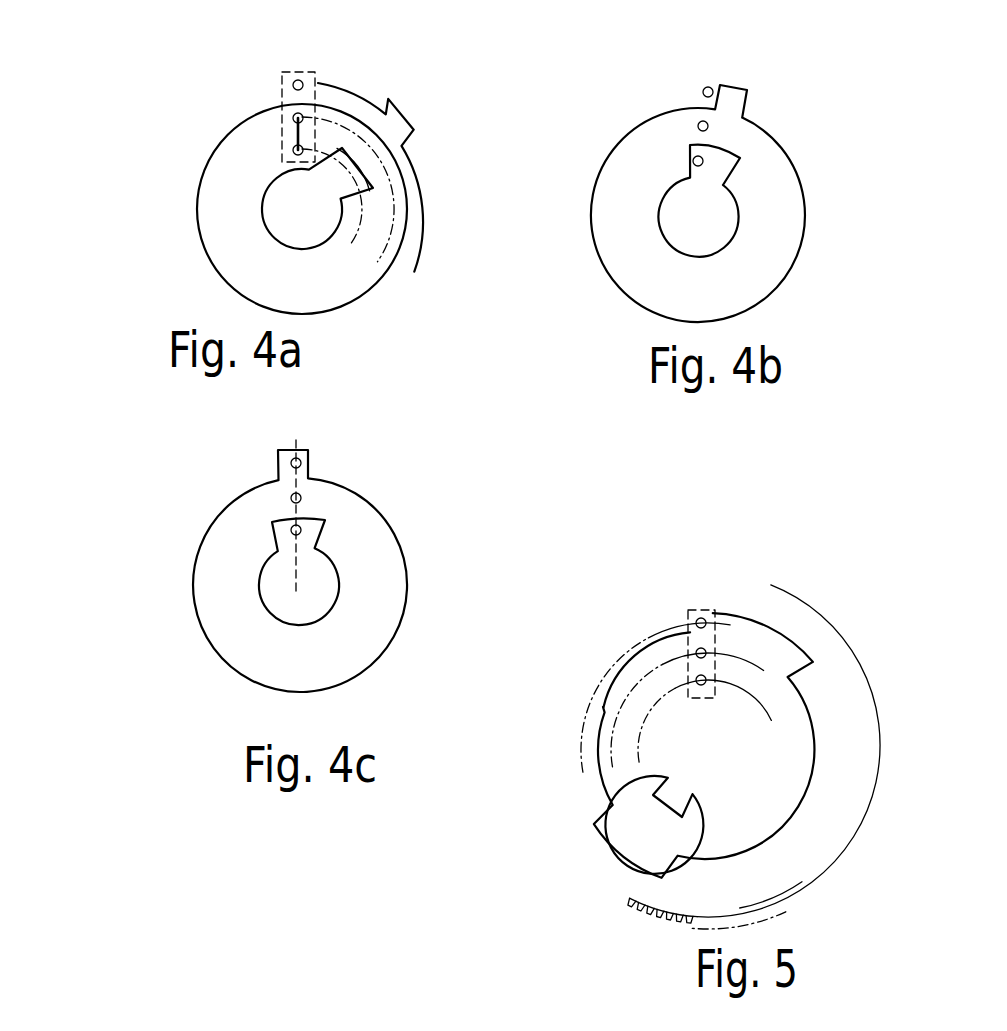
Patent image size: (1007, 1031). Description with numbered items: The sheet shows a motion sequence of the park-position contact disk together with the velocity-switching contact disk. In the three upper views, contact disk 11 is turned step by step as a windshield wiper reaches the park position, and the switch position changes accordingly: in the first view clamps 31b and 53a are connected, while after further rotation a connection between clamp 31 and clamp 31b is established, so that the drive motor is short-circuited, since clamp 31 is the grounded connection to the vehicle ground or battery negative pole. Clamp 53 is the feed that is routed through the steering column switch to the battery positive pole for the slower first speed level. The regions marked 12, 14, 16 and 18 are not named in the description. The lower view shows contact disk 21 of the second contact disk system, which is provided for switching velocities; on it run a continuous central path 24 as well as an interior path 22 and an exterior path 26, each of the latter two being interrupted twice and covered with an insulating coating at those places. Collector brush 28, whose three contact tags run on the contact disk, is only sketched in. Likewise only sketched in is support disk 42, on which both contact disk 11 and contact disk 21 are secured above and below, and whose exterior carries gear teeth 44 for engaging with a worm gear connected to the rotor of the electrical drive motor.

In FIG. 4a, the contact disk 11 is at (222, 257).
In FIG. 4b, the contact disk 11 is at (745, 283).
In FIG. 4c, the contact disk 11 is at (253, 657).
In FIG. 4a, the sensor track 12 is at (353, 245).
In FIG. 4a, the sensor track 14 is at (374, 258).
In FIG. 4a, the outer sensing ring 16 is at (416, 258).
In FIG. 4a, the sensor module 18 is at (320, 88).
In FIG. 5, the contact disk 21 is at (615, 773).
In FIG. 5, the interior path 22 is at (642, 727).
In FIG. 5, the central path 24 is at (627, 697).
In FIG. 5, the exterior path 26 is at (607, 677).
In FIG. 5, the collector brush 28 is at (690, 612).
In FIG. 4a, the clamp 31 is at (293, 85).
In FIG. 4b, the clamp 31 is at (703, 91).
In FIG. 4c, the clamp 31 is at (291, 463).
In FIG. 4a, the clamp 31b is at (293, 118).
In FIG. 4b, the clamp 31b is at (698, 126).
In FIG. 4c, the clamp 31b is at (291, 498).
In FIG. 5, the support disk 42 is at (803, 858).
In FIG. 5, the gear teeth 44 is at (626, 921).
In FIG. 4a, the clamp 53 is at (136, 118).
In FIG. 4a, the clamp 53a is at (293, 150).
In FIG. 4b, the clamp 53a is at (694, 160).
In FIG. 4c, the clamp 53a is at (291, 530).